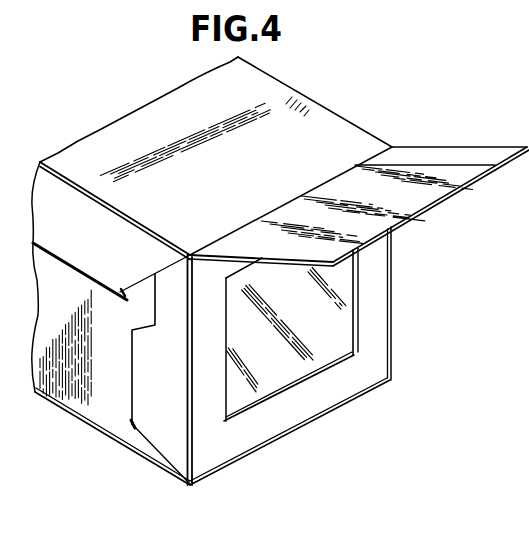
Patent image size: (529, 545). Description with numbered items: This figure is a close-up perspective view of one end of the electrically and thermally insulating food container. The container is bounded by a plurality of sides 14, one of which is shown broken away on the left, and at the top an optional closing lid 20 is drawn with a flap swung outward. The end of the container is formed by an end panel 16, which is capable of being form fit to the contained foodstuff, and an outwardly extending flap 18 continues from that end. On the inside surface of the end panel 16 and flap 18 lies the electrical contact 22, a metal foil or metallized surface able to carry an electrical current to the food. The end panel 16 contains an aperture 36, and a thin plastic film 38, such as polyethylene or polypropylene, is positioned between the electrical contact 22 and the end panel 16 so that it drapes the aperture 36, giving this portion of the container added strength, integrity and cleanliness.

The sides 14 is at (100, 417).
The end panel 16 is at (233, 444).
The outwardly extending flap 18 is at (461, 155).
The closing lid 20 is at (336, 140).
The electrical contact 22 is at (415, 198).
The aperture 36 is at (353, 332).
The thin plastic film 38 is at (329, 349).